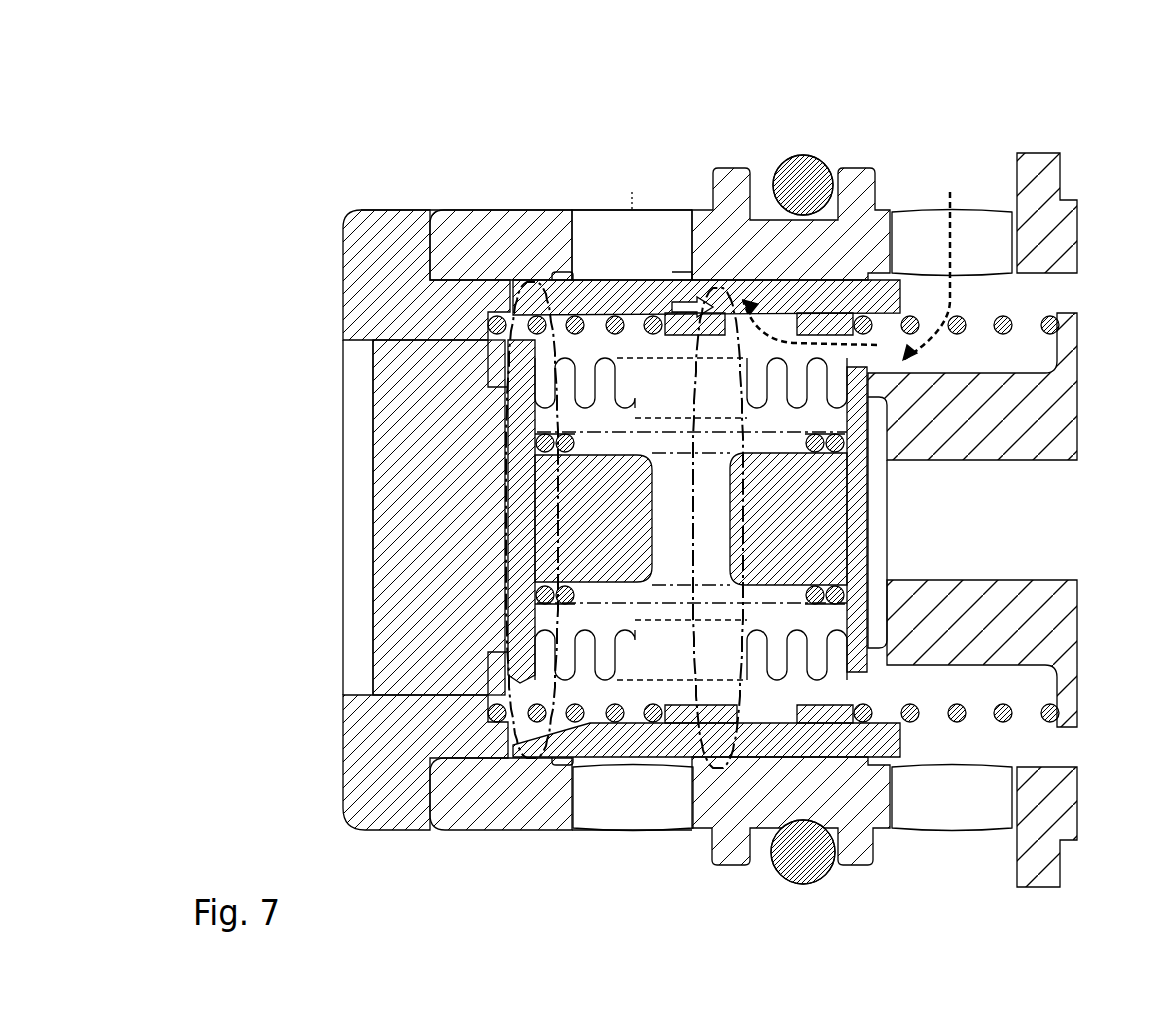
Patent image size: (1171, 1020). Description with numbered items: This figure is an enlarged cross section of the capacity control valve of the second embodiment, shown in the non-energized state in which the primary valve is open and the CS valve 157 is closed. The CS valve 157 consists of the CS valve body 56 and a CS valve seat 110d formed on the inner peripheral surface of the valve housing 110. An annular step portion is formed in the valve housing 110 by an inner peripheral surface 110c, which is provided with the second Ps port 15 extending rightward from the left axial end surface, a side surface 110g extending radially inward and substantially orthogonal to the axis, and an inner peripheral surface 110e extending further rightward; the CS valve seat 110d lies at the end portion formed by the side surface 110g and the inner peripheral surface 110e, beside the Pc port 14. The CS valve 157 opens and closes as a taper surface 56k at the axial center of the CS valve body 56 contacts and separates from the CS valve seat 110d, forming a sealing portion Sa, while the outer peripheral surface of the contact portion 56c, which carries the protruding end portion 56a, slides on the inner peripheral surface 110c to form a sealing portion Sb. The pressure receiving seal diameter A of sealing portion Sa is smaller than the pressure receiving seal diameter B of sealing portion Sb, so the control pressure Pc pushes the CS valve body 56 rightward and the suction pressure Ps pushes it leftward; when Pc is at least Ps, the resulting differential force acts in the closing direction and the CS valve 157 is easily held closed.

The valve housing 110 is at (460, 210).
The inner peripheral surface 110c is at (517, 210).
The second Ps port 15 is at (580, 243).
The contact portion 56c is at (598, 280).
The CS valve 157 is at (706, 390).
The CS valve seat 110d is at (687, 276).
The taper surface 56k is at (637, 70).
The inner peripheral surface 110e is at (857, 278).
The CS valve body 56 is at (873, 235).
The Pc port 14 is at (990, 215).
The side surface 110g is at (753, 817).
The protruding end portion 56a is at (722, 758).
The pressure receiving seal diameter A is at (747, 517).
The pressure receiving seal diameter B is at (505, 493).
The suction pressure Ps is at (633, 184).
The control pressure Pc is at (855, 257).
The sealing portion Sa is at (850, 825).
The sealing portion Sb is at (533, 762).